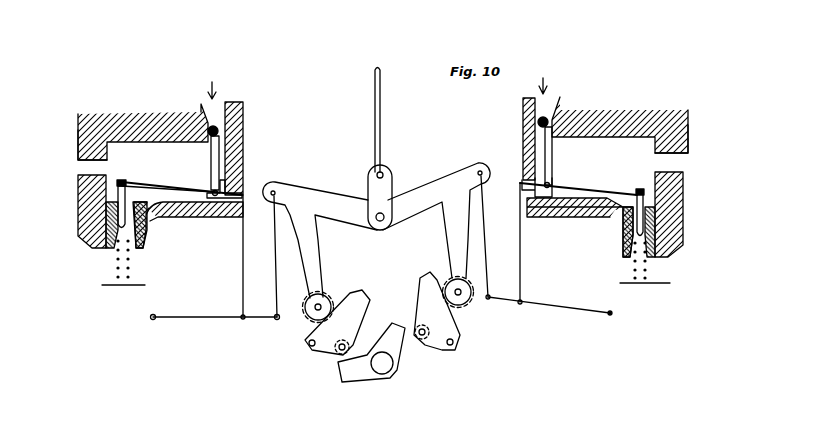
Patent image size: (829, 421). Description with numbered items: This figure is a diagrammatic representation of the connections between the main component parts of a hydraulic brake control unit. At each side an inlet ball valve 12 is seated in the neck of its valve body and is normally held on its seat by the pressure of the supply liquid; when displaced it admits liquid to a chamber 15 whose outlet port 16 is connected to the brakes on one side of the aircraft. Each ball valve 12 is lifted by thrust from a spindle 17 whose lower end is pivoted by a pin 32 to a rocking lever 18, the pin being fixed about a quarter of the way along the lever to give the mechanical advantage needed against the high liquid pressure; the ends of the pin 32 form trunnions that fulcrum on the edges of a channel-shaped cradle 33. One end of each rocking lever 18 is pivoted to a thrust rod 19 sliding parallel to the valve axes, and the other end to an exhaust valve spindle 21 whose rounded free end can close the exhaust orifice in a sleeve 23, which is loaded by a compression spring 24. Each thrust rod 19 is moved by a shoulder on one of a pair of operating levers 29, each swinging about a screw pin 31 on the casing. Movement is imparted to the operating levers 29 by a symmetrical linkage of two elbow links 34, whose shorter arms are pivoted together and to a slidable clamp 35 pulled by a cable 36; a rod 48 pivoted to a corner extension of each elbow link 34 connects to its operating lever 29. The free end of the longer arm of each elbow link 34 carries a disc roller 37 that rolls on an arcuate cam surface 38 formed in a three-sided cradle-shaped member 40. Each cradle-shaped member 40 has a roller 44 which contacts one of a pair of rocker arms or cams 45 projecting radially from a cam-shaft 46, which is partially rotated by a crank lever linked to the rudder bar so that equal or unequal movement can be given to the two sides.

The ball valve 12 is at (220, 128).
The chamber 15 is at (130, 150).
The outlet port 16 is at (80, 166).
The spindle 17 is at (210, 165).
The rocking lever 18 is at (175, 194).
The thrust rod 19 is at (243, 252).
The exhaust valve spindle 21 is at (116, 198).
The sleeve 23 is at (108, 233).
The compression spring 24 is at (113, 266).
The operating lever 29 is at (183, 318).
The screw pin 31 is at (151, 317).
The pin 32 is at (214, 191).
The cradle 33 is at (216, 200).
The elbow link 34 is at (318, 252).
The clamp 35 is at (368, 190).
The cable 36 is at (374, 119).
The roller 37 is at (309, 320).
The cam surface 38 is at (334, 297).
The cradle shaped member 40 is at (358, 305).
The roller 44 is at (335, 354).
The rocker arm 45 is at (395, 323).
The cam-shaft 46 is at (388, 368).
The rod 48 is at (276, 292).